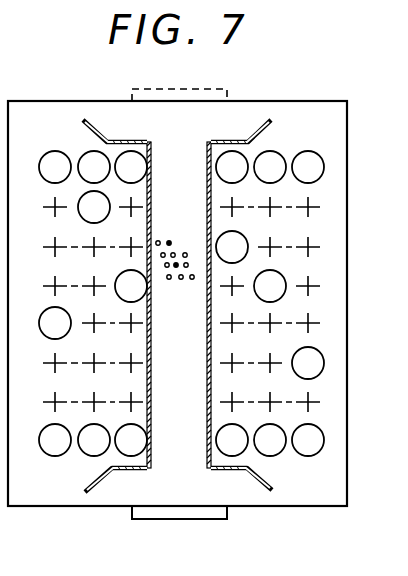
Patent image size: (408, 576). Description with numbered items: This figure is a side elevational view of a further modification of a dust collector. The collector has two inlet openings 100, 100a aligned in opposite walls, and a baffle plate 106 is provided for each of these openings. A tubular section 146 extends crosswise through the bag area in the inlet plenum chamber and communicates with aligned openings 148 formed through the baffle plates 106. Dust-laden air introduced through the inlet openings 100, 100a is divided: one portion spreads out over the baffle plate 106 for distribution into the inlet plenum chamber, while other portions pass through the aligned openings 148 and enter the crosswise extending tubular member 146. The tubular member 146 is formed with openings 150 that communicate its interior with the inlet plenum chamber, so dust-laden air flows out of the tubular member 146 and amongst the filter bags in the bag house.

The inlet opening 100 is at (200, 519).
The inlet opening 100a is at (193, 88).
The baffle plate 106 is at (228, 140).
The tubular section 146 is at (211, 343).
The aligned openings 148 is at (171, 132).
The openings 150 is at (151, 270).